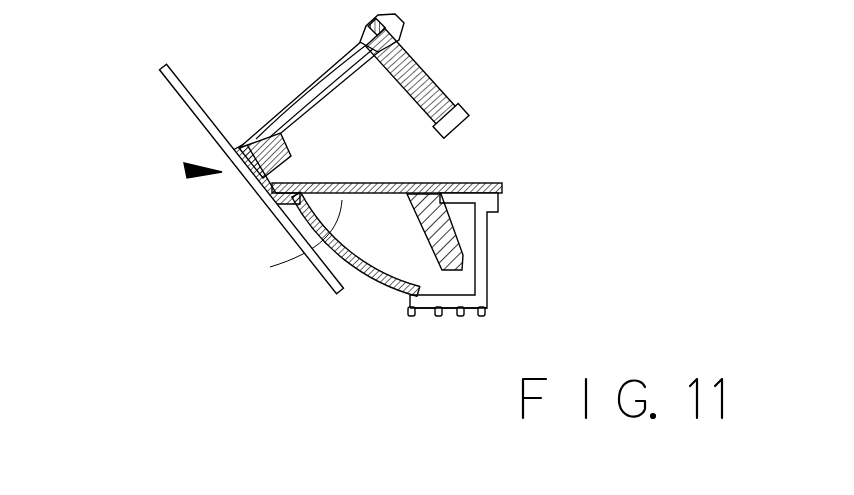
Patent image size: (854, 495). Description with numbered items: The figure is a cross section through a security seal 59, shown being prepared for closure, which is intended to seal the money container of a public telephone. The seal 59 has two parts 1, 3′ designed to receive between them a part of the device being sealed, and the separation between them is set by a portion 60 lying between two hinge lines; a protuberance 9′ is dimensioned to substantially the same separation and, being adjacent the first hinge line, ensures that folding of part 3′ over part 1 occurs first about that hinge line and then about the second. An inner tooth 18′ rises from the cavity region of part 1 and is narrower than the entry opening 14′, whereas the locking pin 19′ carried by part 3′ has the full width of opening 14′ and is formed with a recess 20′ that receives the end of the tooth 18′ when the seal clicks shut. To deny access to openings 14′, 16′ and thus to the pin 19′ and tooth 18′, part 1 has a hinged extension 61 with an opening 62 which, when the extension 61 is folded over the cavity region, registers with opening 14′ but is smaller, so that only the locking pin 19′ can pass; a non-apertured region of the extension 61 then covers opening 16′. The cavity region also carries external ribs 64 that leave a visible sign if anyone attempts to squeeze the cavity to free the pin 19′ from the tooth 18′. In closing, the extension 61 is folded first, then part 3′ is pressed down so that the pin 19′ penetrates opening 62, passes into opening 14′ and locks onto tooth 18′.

The part 1 is at (488, 242).
The part 3′ is at (305, 88).
The protuberance 9′ is at (286, 150).
The entry opening 14′ is at (473, 183).
The opening 16′ is at (307, 250).
The tooth 18′ is at (436, 232).
The locking pin 19′ is at (426, 70).
The recess 20′ is at (436, 128).
The seal 59 is at (185, 171).
The portion 60 is at (243, 190).
The hinged extension 61 is at (372, 184).
The opening 62 is at (463, 183).
The external ribs 64 is at (404, 314).